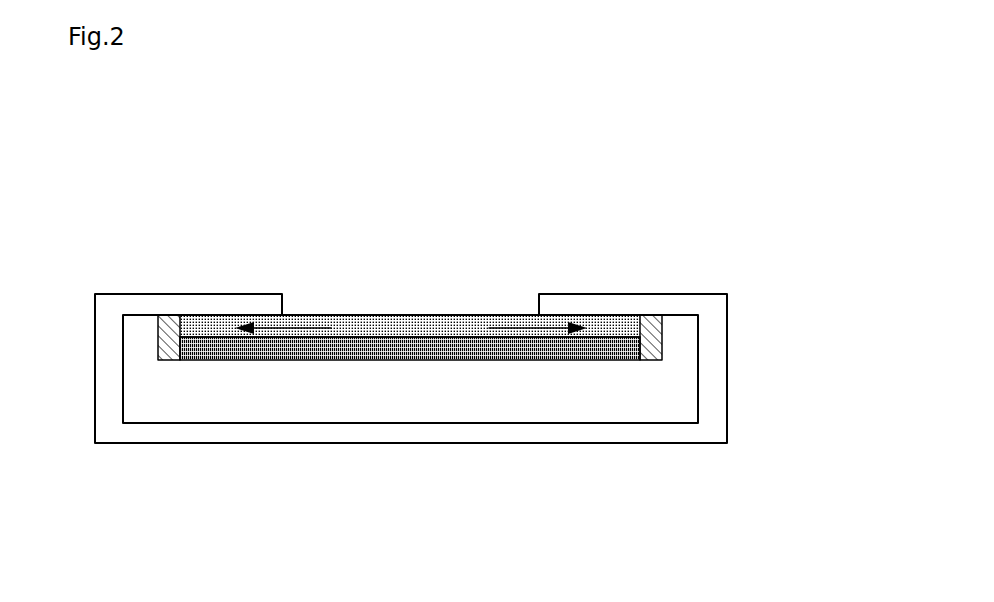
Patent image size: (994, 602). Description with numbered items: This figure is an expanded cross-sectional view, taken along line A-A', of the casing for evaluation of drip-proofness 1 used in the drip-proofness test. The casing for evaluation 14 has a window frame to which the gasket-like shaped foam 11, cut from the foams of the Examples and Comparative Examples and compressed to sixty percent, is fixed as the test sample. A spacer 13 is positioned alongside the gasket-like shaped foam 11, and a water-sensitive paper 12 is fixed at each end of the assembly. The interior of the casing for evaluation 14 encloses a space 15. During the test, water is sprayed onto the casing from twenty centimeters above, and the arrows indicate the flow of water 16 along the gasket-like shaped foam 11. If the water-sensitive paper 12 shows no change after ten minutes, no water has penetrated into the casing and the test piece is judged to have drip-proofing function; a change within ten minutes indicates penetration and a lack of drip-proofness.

The casing for evaluation of drip-proofness 1 is at (462, 331).
The gasket-like shaped foam 11 is at (205, 315).
The water-sensitive paper 12 is at (165, 360).
The spacer 13 is at (397, 353).
The casing for evaluation 14 is at (702, 303).
The space 15 is at (287, 402).
The flow of water 16 is at (331, 328).